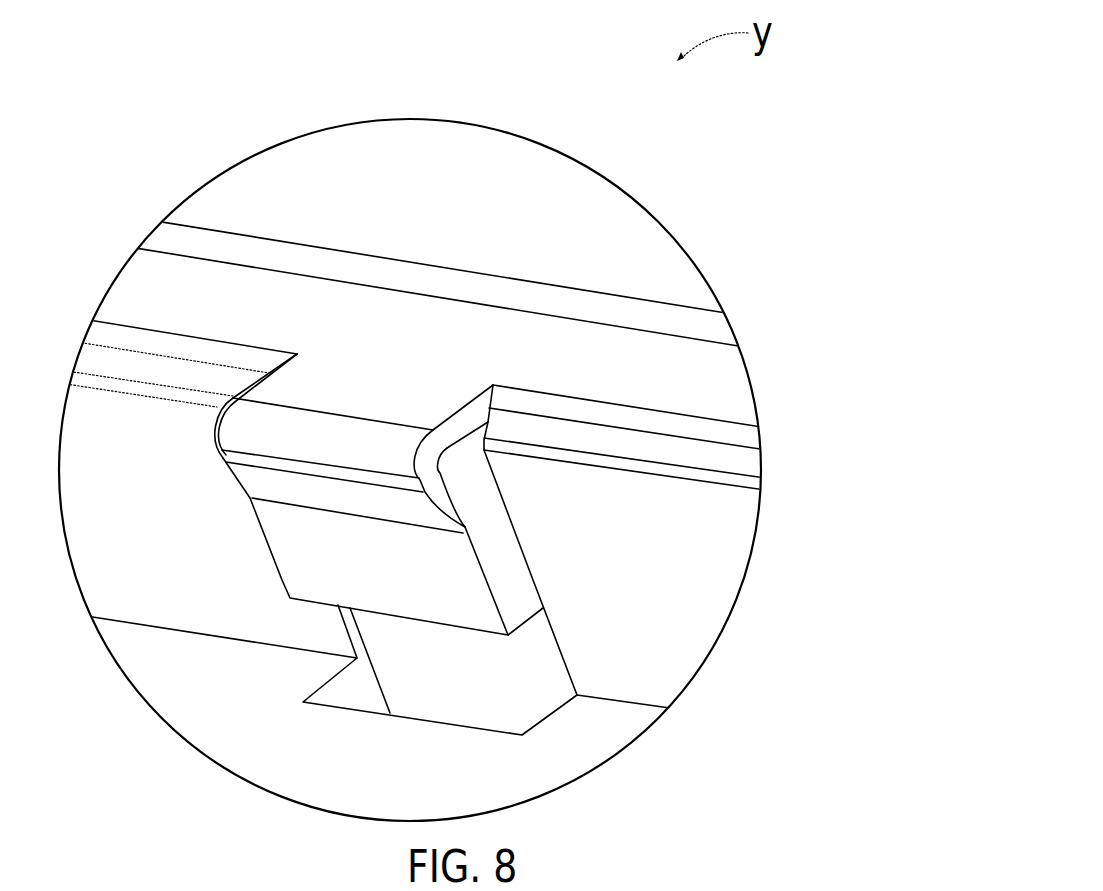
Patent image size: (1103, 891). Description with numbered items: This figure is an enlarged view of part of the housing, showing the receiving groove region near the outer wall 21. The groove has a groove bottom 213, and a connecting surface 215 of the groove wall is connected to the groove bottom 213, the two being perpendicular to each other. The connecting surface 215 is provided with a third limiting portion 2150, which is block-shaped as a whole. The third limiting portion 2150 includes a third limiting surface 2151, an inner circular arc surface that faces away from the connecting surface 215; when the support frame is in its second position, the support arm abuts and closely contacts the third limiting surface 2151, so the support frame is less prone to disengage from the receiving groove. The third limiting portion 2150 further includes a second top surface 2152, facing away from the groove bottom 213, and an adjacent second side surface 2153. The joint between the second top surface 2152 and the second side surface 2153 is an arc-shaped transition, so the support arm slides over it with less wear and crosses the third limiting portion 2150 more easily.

The outer wall 21 is at (698, 368).
The groove bottom 213 is at (198, 693).
The connecting surface 215 is at (675, 598).
The third limiting portion 2150 is at (505, 557).
The third limiting surface 2151 is at (327, 497).
The second top surface 2152 is at (352, 393).
The second side surface 2153 is at (238, 460).